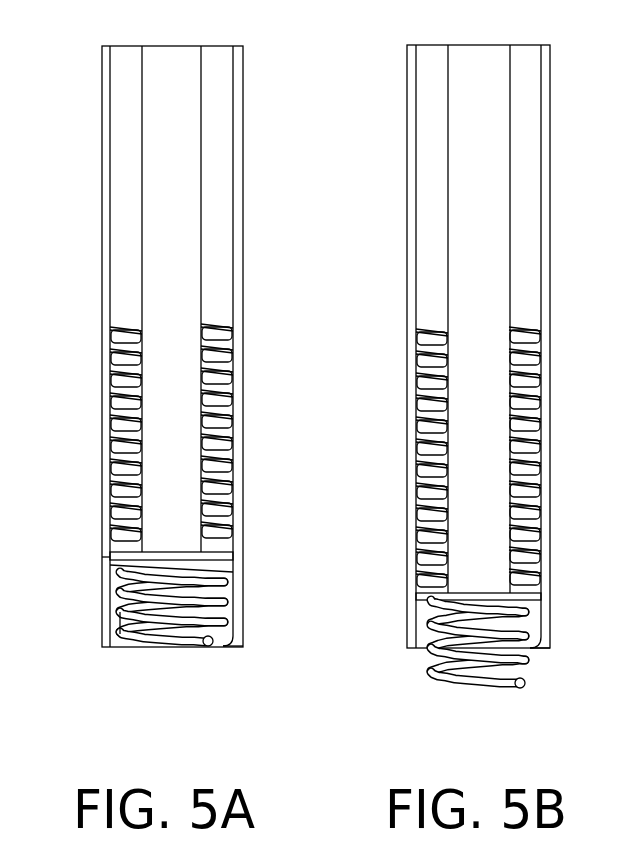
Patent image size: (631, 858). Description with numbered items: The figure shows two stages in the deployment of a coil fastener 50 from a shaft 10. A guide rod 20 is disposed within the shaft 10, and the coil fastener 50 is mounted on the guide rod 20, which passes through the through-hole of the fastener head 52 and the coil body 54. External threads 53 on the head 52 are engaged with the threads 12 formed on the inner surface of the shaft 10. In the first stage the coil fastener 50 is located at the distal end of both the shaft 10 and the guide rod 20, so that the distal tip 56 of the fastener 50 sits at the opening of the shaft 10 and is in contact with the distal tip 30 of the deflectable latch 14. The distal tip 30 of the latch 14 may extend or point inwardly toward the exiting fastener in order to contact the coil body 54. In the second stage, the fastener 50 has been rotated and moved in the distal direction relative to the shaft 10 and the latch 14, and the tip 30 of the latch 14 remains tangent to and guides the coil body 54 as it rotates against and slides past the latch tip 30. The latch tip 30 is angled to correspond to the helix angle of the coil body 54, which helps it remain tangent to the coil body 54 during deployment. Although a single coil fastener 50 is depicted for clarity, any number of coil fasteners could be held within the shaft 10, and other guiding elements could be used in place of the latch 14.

In FIG. 5A, the shaft 10 is at (102, 233).
In FIG. 5B, the shaft 10 is at (407, 211).
In FIG. 5A, the guide rod 20 is at (155, 145).
In FIG. 5B, the guide rod 20 is at (469, 145).
In FIG. 5A, the threads 12 is at (238, 453).
In FIG. 5B, the threads 12 is at (478, 457).
In FIG. 5A, the latch 14 is at (243, 553).
In FIG. 5B, the latch 14 is at (543, 562).
In FIG. 5A, the external threads 53 is at (102, 557).
In FIG. 5A, the fastener head 52 is at (115, 568).
In FIG. 5A, the coil fastener 50 is at (218, 612).
In FIG. 5A, the coil body 54 is at (116, 612).
In FIG. 5B, the coil body 54 is at (430, 650).
In FIG. 5A, the distal tip 56 is at (203, 652).
In FIG. 5A, the distal tip 30 is at (240, 643).
In FIG. 5B, the distal tip 30 is at (545, 642).